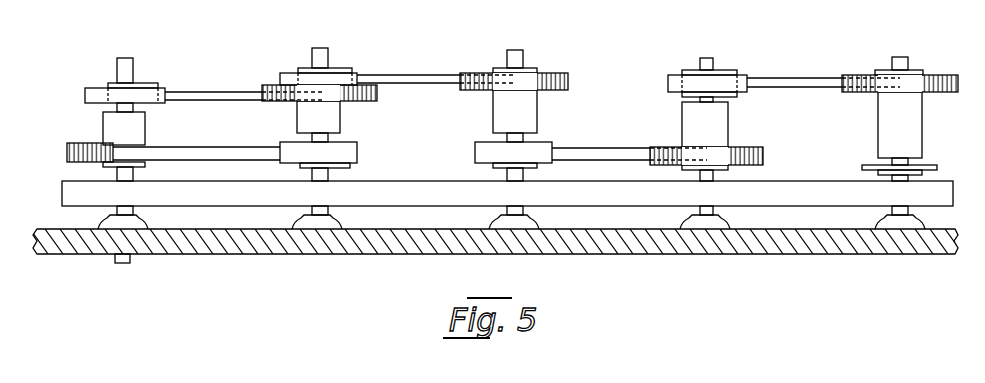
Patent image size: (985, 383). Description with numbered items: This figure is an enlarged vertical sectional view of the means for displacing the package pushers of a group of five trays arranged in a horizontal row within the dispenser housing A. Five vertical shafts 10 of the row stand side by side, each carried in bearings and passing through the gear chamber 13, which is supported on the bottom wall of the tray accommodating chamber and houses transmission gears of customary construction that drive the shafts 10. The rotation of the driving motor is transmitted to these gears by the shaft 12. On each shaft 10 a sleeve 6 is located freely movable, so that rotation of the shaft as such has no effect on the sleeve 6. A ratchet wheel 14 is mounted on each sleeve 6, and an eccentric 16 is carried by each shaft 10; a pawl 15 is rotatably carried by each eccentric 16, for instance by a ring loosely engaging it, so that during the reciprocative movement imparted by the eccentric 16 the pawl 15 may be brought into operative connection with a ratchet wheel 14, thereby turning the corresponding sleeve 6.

The sleeve 6 is at (138, 135).
The vertical shaft 10 is at (129, 70).
The shaft 12 is at (131, 258).
The gear chamber 13 is at (62, 192).
The ratchet wheel 14 is at (67, 155).
The pawl 15 is at (224, 98).
The eccentric 16 is at (300, 165).
The dispenser housing A is at (845, 257).